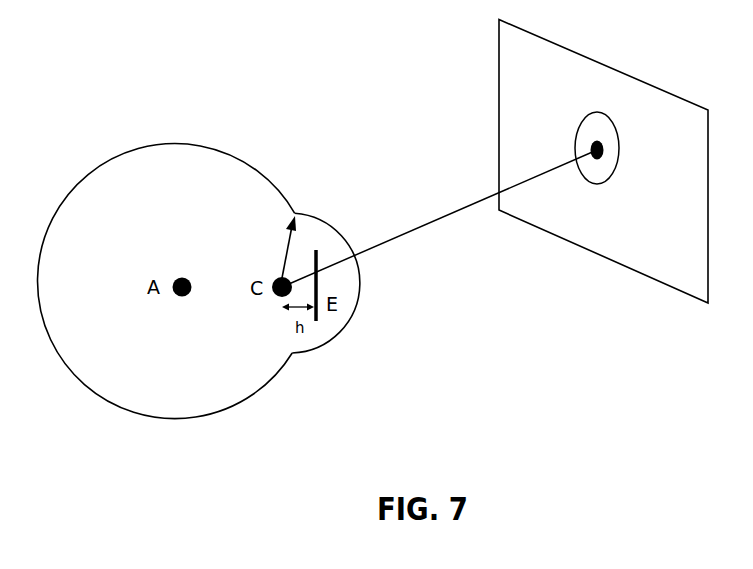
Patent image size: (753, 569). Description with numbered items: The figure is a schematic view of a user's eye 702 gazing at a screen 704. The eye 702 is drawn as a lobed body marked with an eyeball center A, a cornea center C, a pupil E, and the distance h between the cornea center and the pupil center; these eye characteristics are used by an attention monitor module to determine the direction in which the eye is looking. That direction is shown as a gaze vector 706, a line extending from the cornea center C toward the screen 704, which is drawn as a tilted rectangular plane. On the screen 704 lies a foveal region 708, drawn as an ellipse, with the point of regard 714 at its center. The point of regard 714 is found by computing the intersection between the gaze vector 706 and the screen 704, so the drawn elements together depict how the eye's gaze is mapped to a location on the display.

The eye 702 is at (123, 231).
The screen 704 is at (552, 90).
The gaze vector 706 is at (408, 233).
The foveal region 708 is at (613, 178).
The point of regard 714 is at (604, 146).